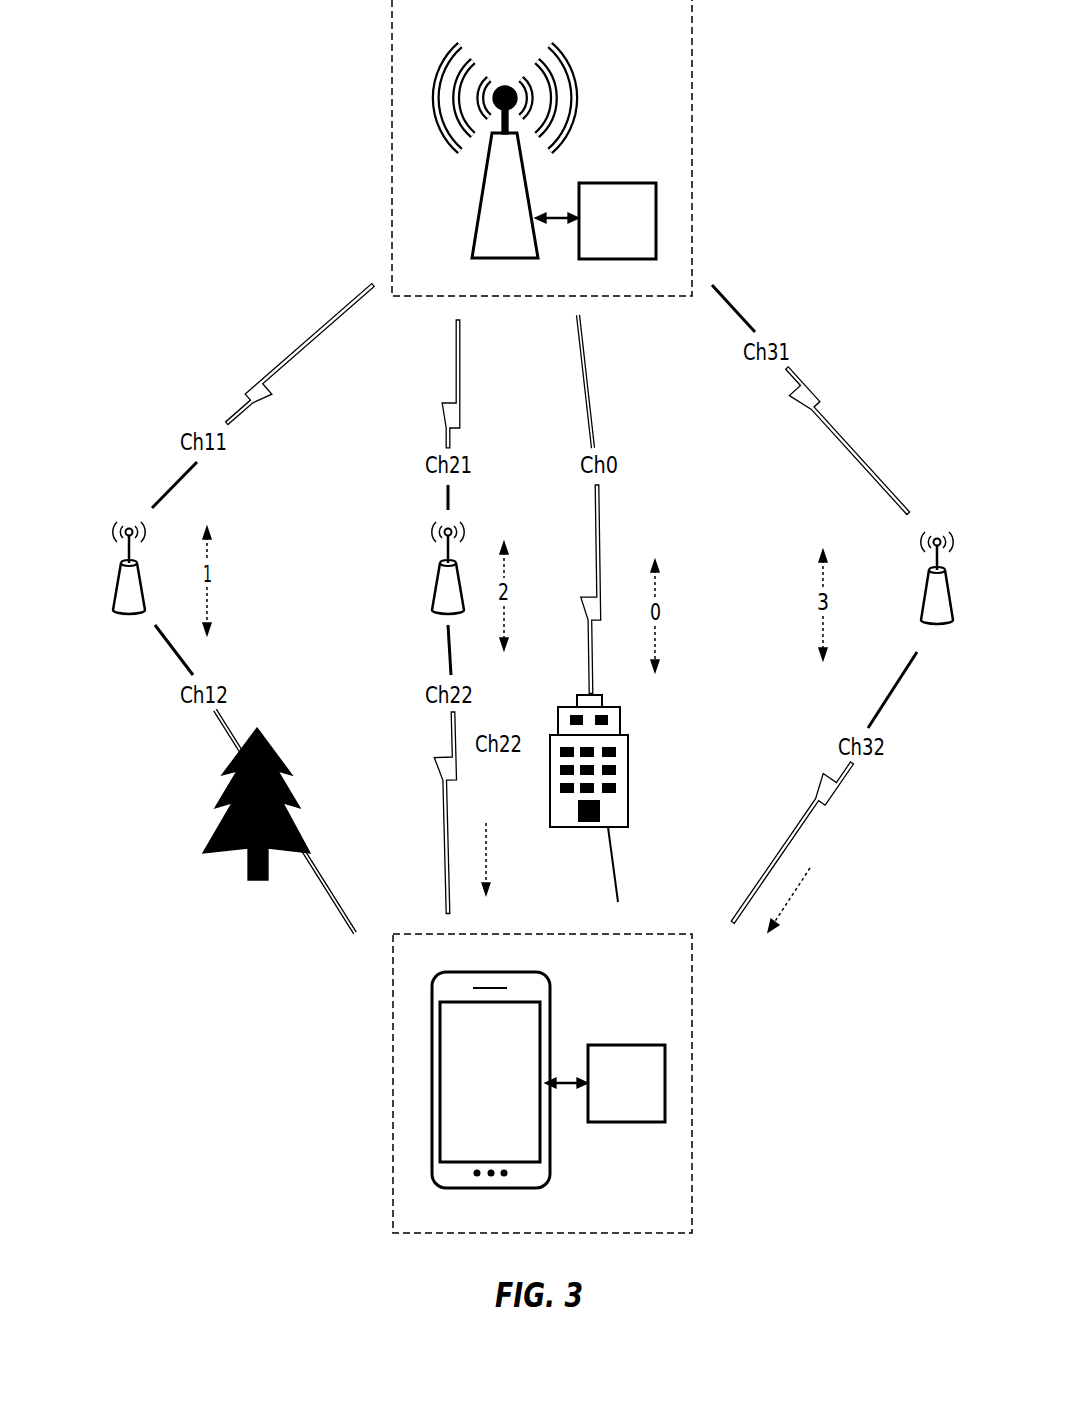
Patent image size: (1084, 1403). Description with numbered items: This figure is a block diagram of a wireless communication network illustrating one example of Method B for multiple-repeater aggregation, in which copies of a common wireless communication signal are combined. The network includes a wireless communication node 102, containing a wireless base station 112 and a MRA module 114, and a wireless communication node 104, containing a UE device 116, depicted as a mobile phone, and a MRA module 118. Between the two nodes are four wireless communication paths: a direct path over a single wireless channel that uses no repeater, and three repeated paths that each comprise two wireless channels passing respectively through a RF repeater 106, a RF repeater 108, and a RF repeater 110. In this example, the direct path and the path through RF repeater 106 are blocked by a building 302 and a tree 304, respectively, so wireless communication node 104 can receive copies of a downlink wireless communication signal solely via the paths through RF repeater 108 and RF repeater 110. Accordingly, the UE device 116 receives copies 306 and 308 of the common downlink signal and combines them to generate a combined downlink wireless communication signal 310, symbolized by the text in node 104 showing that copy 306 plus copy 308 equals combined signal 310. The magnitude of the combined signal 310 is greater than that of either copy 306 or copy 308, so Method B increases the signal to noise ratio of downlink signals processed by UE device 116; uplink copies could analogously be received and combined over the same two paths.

The wireless communication node 102 is at (488, 291).
The wireless communication node 104 is at (495, 1227).
The RF repeater 106 is at (114, 590).
The RF repeater 108 is at (433, 590).
The RF repeater 110 is at (922, 598).
The wireless base station 112 is at (523, 251).
The MRA module 114 is at (635, 249).
The UE device 116 is at (508, 1092).
The MRA module 118 is at (643, 1111).
The building 302 is at (631, 773).
The tree 304 is at (220, 830).
The copy of downlink wireless communication signal 306 is at (486, 859).
The copy of downlink wireless communication signal 308 is at (789, 900).
The combined downlink wireless communication signal 310 is at (496, 950).